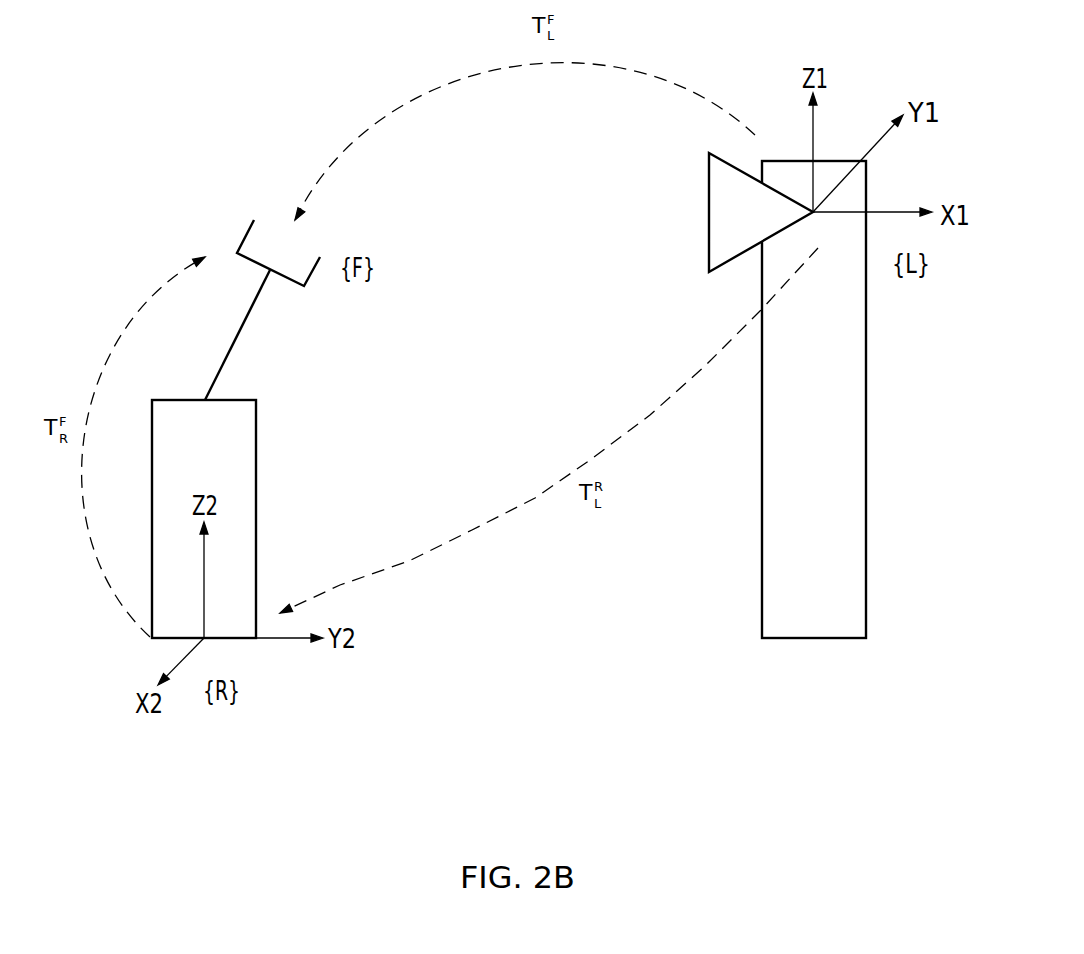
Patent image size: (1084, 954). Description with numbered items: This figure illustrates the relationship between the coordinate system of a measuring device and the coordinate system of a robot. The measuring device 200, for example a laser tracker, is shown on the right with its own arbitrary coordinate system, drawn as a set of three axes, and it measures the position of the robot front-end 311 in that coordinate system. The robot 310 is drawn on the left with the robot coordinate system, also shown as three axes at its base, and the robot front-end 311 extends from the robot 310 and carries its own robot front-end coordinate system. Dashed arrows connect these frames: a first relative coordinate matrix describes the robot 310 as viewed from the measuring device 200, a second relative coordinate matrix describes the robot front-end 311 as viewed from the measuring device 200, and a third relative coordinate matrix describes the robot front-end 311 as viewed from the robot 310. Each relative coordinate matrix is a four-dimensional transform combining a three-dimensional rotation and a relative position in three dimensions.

The measuring device 200 is at (845, 549).
The robot 310 is at (250, 423).
The robot front-end 311 is at (254, 218).